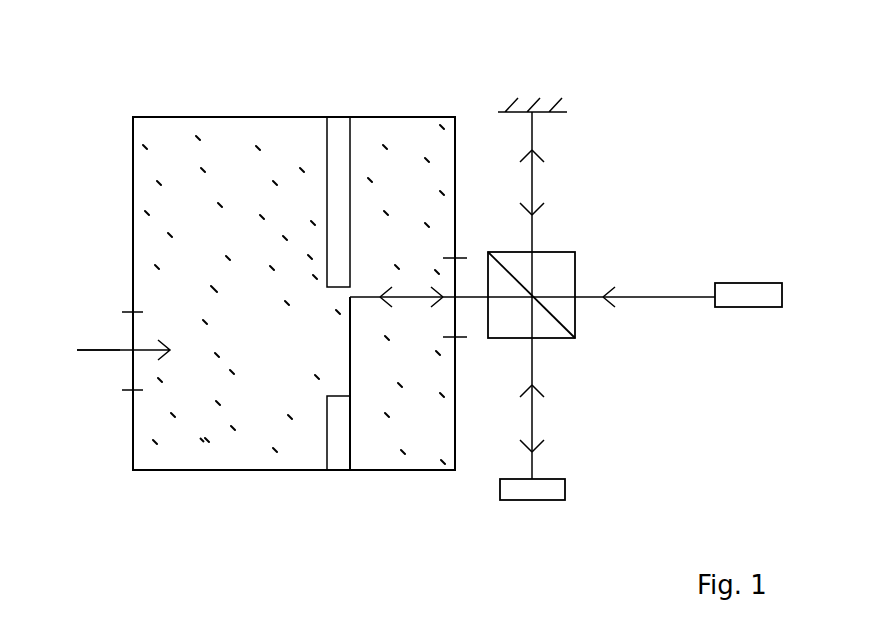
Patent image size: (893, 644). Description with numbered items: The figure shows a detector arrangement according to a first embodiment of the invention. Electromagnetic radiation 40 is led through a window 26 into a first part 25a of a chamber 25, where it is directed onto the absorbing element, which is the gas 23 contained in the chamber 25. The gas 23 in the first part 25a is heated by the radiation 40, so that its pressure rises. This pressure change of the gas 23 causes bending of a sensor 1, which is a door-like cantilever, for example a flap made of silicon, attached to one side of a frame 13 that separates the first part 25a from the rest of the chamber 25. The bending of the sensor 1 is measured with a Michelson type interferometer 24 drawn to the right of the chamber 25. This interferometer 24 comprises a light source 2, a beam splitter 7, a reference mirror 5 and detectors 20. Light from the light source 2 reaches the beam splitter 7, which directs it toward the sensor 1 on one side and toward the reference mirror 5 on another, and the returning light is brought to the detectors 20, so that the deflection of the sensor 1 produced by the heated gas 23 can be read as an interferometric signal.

The sensor 1 is at (350, 345).
The light source 2 is at (745, 296).
The reference mirror 5 is at (547, 113).
The beam splitter 7 is at (569, 249).
The frame 13 is at (337, 447).
The detectors 20 is at (530, 493).
The gas 23 is at (205, 440).
The Michelson type interferometer 24 is at (654, 421).
The chamber 25 is at (293, 117).
The first part of the chamber 25a is at (228, 145).
The window 26 is at (133, 337).
The electromagnetic radiation 40 is at (110, 350).